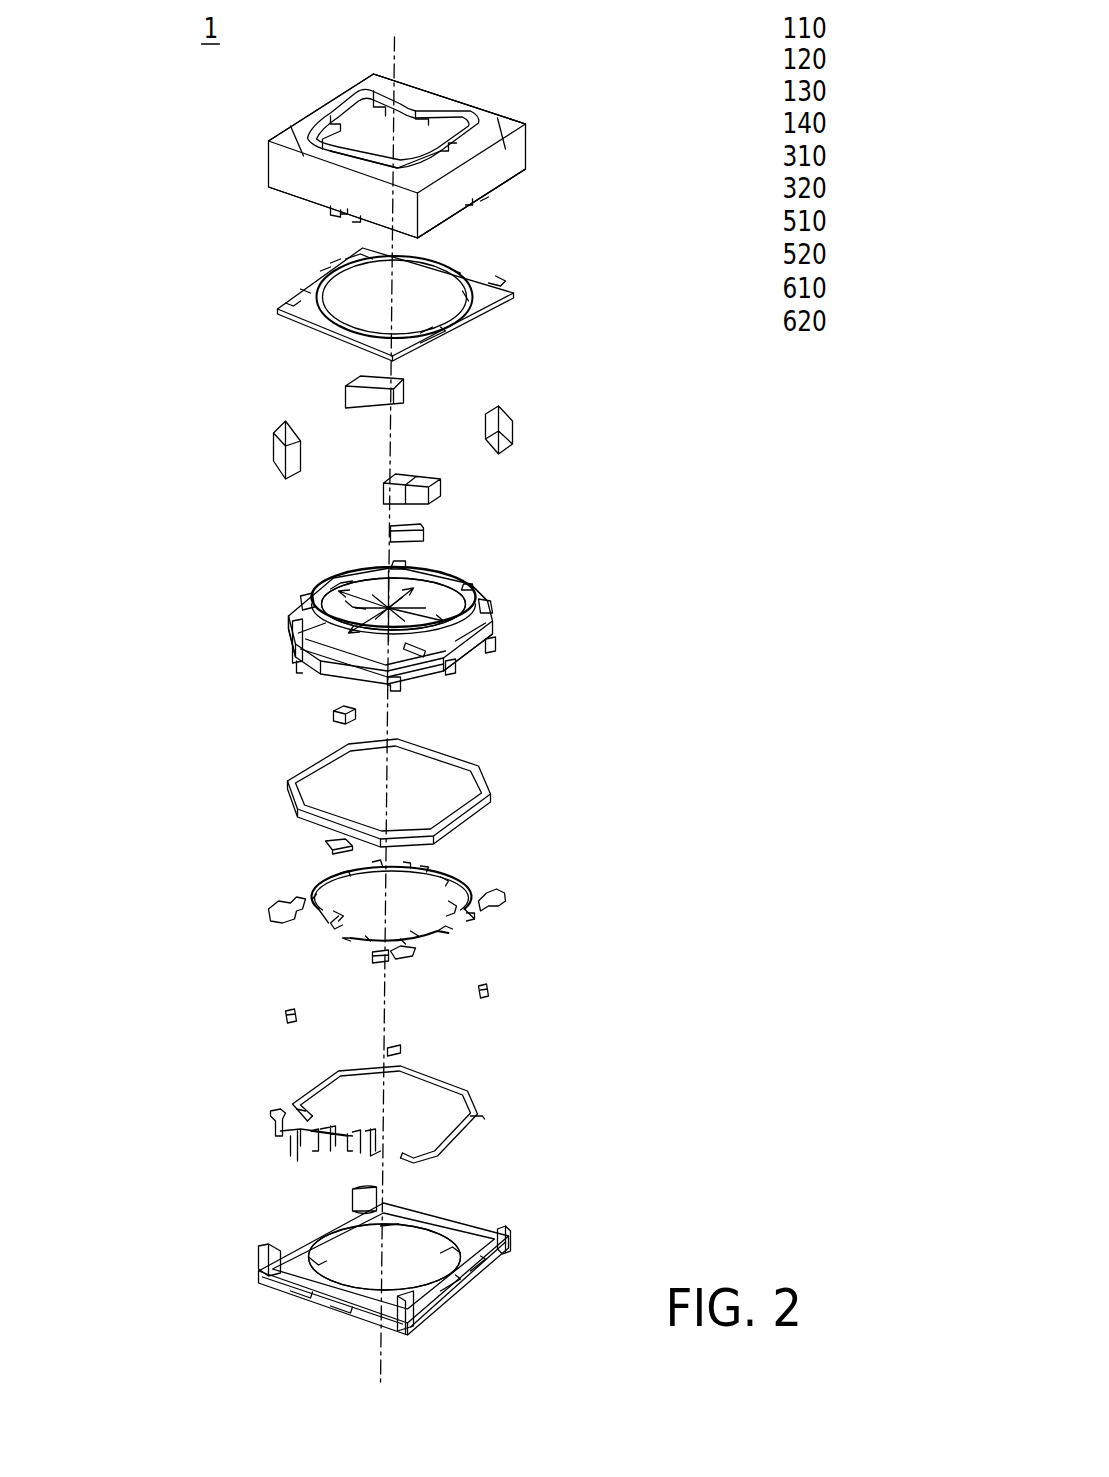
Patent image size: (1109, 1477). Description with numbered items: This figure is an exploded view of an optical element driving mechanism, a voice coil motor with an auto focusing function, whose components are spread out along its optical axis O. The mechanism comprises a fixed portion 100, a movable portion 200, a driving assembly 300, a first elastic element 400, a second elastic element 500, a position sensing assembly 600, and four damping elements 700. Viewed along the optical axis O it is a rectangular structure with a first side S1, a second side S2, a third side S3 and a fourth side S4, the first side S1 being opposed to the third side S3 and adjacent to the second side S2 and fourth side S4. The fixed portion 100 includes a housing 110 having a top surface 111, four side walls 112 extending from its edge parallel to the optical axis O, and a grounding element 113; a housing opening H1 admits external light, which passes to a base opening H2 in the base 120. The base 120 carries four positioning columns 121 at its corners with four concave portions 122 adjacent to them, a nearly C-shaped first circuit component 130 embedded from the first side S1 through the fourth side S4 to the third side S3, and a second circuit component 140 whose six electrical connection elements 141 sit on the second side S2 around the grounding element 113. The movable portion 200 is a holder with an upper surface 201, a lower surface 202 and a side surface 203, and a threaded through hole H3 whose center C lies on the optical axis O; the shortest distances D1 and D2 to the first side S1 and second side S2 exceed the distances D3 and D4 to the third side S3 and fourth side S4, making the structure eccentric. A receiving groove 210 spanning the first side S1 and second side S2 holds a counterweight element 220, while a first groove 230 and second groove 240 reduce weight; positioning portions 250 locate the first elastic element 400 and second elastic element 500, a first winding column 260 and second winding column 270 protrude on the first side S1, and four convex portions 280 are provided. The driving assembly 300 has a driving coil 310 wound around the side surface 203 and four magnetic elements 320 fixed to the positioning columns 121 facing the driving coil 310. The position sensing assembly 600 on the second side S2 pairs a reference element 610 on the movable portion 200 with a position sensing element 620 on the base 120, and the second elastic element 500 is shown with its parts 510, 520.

The optical axis O is at (391, 697).
The fixed portion 100 is at (766, 131).
The housing 110 is at (531, 139).
The top surface 111 is at (483, 140).
The side walls 112 is at (450, 200).
The grounding element 113 is at (337, 213).
The first side S1 is at (482, 160).
The second side S2 is at (323, 162).
The third side S3 is at (317, 102).
The fourth side S4 is at (448, 95).
The housing opening H1 is at (422, 140).
The base 120 is at (483, 1285).
The positioning columns 121 is at (417, 1250).
The concave portions 122 is at (278, 1260).
The base opening H2 is at (487, 1240).
The first circuit component 130 is at (477, 1118).
The second circuit component 140 is at (373, 1170).
The electrical connection elements 141 is at (270, 1117).
The movable portion 200 is at (490, 597).
The upper surface 201 is at (487, 587).
The lower surface 202 is at (290, 633).
The side surface 203 is at (487, 650).
The receiving groove 210 is at (420, 620).
The counterweight element 220 is at (423, 530).
The first groove 230 is at (493, 607).
The second groove 240 is at (298, 640).
The positioning portions 250 is at (293, 608).
The first winding column 260 is at (450, 663).
The second winding column 270 is at (488, 643).
The convex portions 280 is at (387, 680).
The center C is at (372, 575).
The shortest distance to first side D1 is at (437, 622).
The shortest distance to second side D2 is at (352, 603).
The shortest distance to third side D3 is at (320, 598).
The shortest distance to fourth side D4 is at (420, 563).
The through hole H3 is at (337, 598).
The driving assembly 300 is at (766, 199).
The driving coil 310 is at (467, 810).
The magnetic elements 320 is at (350, 392).
The first elastic element 400 is at (480, 320).
The second elastic element 500 is at (766, 266).
The lower elastic element 510 is at (450, 932).
The lower elastic element tab 520 is at (280, 907).
The position sensing assembly 600 is at (766, 332).
The reference element 610 is at (333, 715).
The position sensing element 620 is at (330, 842).
The damping element 700 is at (373, 957).